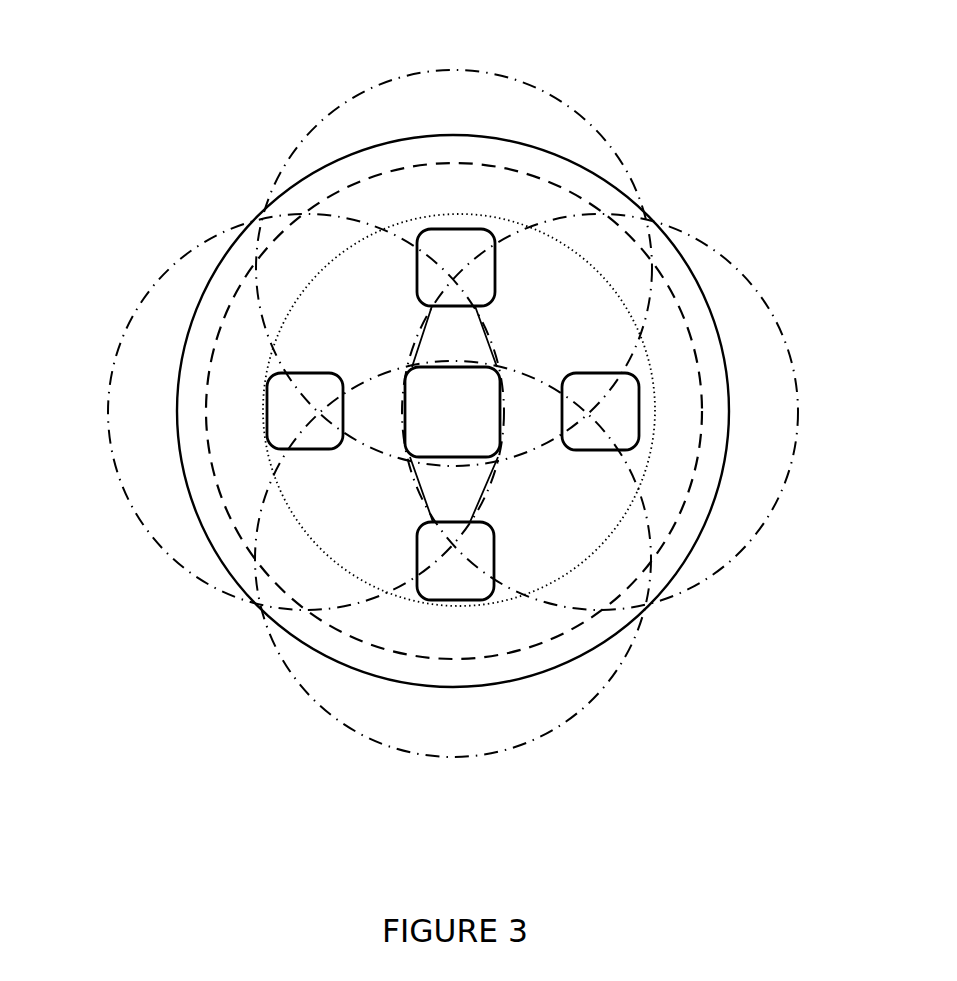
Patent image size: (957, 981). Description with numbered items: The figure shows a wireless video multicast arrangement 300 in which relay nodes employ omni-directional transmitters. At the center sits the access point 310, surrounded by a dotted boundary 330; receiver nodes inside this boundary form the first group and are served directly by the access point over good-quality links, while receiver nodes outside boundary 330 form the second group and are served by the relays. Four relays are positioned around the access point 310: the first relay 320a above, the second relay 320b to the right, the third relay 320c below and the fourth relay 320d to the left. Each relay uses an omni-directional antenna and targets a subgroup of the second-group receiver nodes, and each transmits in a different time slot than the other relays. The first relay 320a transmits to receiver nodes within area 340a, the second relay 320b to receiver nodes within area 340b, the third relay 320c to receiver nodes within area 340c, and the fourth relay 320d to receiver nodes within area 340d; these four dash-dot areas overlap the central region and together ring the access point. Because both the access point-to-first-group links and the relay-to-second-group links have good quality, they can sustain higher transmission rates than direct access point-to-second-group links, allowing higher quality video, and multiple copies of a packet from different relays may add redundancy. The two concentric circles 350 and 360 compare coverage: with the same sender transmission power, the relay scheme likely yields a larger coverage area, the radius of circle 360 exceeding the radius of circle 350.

The wireless network system 300 is at (453, 457).
The access point 310 is at (410, 366).
The relay 1 320a is at (495, 276).
The relay 2 320b is at (593, 450).
The relay 3 320c is at (417, 552).
The relay 4 320d is at (294, 449).
The access point coverage area 330 is at (455, 213).
The area 340a is at (456, 69).
The area 340b is at (798, 406).
The area 340c is at (450, 757).
The area 340d is at (110, 413).
The coverage radius 350 is at (466, 660).
The coverage radius 360 is at (447, 687).